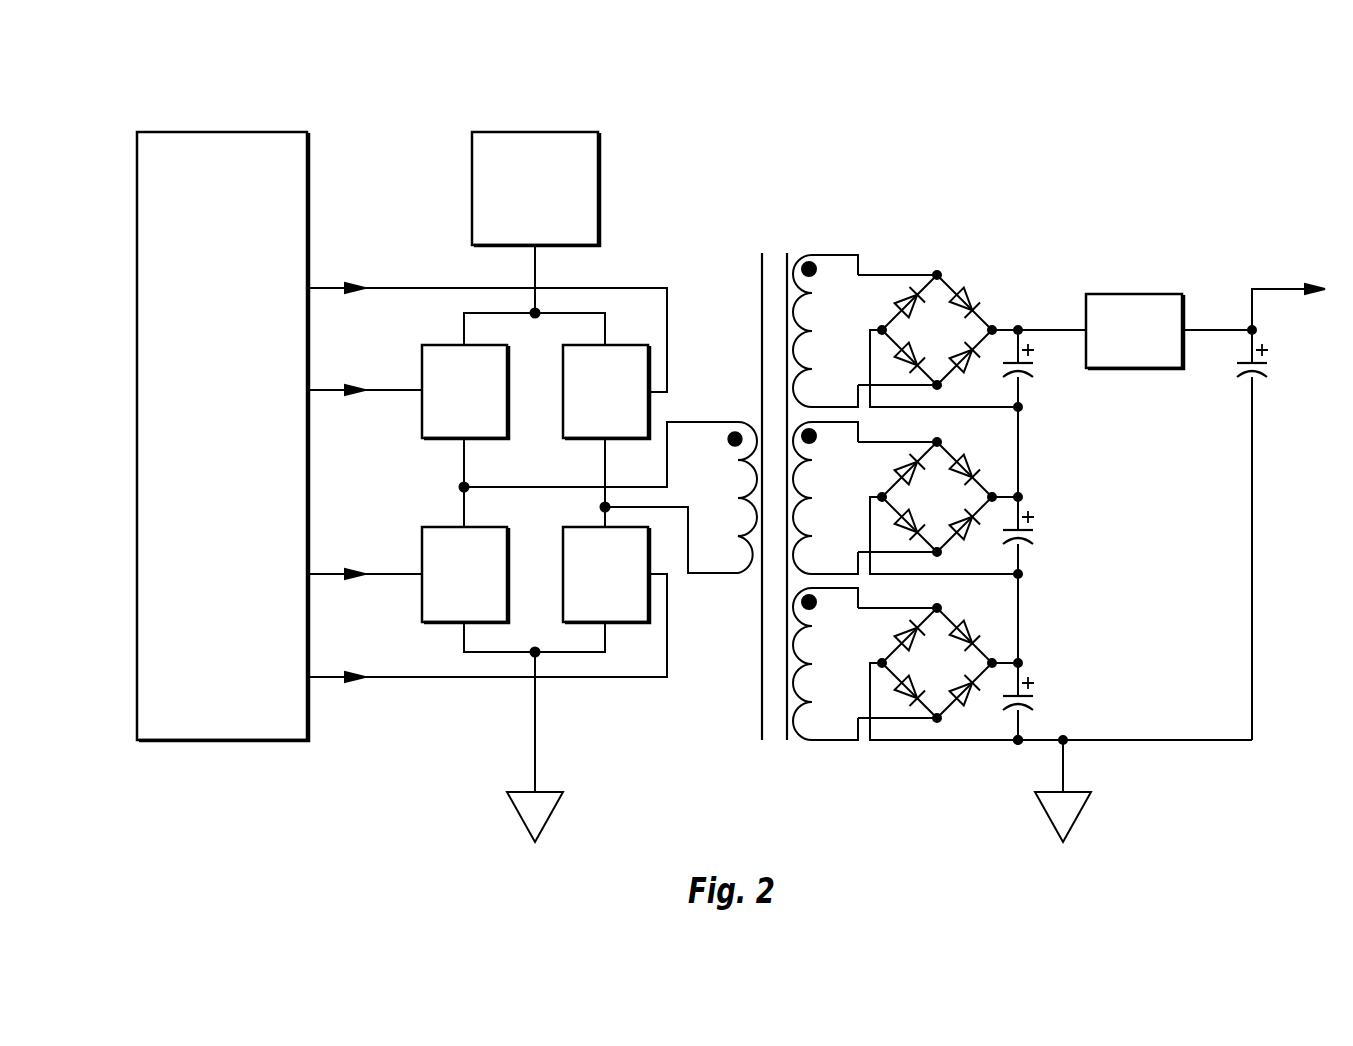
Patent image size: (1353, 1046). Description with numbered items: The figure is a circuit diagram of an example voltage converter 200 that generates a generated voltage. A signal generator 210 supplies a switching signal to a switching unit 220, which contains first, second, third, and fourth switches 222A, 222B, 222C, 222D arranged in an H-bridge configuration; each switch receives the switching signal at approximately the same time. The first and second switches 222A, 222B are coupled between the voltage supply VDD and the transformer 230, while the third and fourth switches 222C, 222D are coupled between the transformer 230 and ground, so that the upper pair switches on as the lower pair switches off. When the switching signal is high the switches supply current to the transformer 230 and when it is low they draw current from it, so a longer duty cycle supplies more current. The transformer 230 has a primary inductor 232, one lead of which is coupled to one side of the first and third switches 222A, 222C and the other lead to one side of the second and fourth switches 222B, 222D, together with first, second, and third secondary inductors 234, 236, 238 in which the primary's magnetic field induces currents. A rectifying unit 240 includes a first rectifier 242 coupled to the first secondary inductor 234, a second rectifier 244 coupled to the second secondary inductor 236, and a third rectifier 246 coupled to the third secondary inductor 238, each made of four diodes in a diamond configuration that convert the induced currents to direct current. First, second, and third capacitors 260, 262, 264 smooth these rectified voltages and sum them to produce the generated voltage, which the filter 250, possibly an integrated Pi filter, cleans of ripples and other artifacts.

The voltage converter 200 is at (246, 61).
The signal generator 210 is at (205, 476).
The switching unit 220 is at (668, 256).
The first switch 222A is at (440, 406).
The second switch 222B is at (581, 406).
The third switch 222C is at (440, 588).
The fourth switch 222D is at (581, 588).
The transformer 230 is at (818, 192).
The primary inductor 232 is at (683, 422).
The first secondary inductor 234 is at (833, 255).
The second secondary inductor 236 is at (797, 573).
The third secondary inductor 238 is at (838, 740).
The rectifying unit 240 is at (975, 255).
The first rectifier 242 is at (991, 297).
The second rectifier 244 is at (986, 445).
The third rectifier 246 is at (989, 610).
The filter 250 is at (1116, 358).
The first capacitor 260 is at (1035, 375).
The second capacitor 262 is at (1035, 542).
The third capacitor 264 is at (1035, 708).